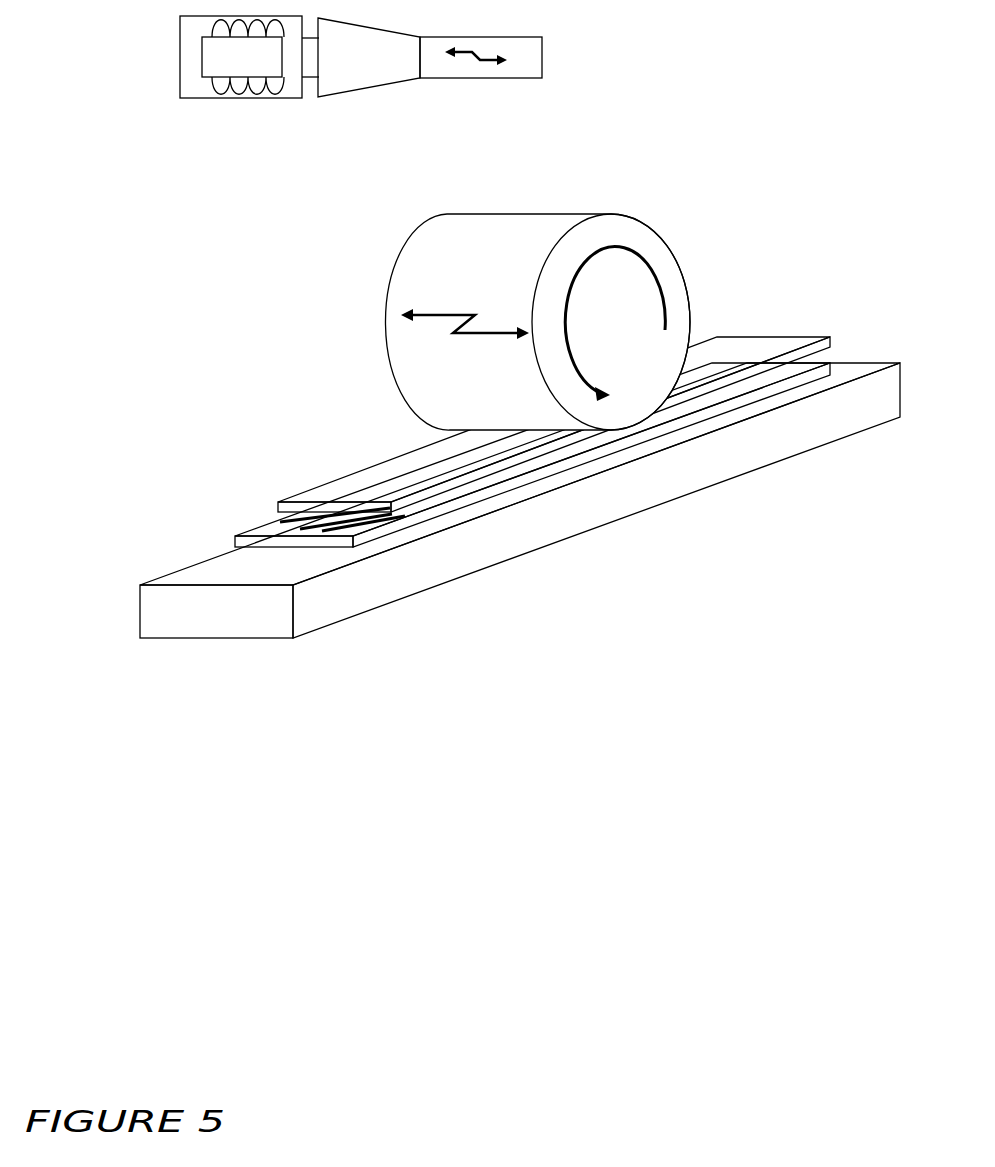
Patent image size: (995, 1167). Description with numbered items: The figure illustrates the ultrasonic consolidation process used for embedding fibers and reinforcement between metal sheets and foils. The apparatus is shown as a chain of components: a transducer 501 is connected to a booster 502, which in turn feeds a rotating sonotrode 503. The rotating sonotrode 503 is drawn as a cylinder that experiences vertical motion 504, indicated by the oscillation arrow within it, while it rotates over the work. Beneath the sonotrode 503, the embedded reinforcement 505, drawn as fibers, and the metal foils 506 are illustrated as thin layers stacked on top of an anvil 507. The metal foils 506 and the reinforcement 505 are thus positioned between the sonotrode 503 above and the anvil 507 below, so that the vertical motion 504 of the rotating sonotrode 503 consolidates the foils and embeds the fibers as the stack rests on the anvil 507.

The transducer 501 is at (238, 98).
The booster 502 is at (361, 70).
The rotating sonotrode 503 is at (520, 253).
The vertical motion 504 is at (428, 333).
The embedded reinforcement 505 is at (278, 515).
The metal foils 506 is at (558, 446).
The anvil 507 is at (447, 565).